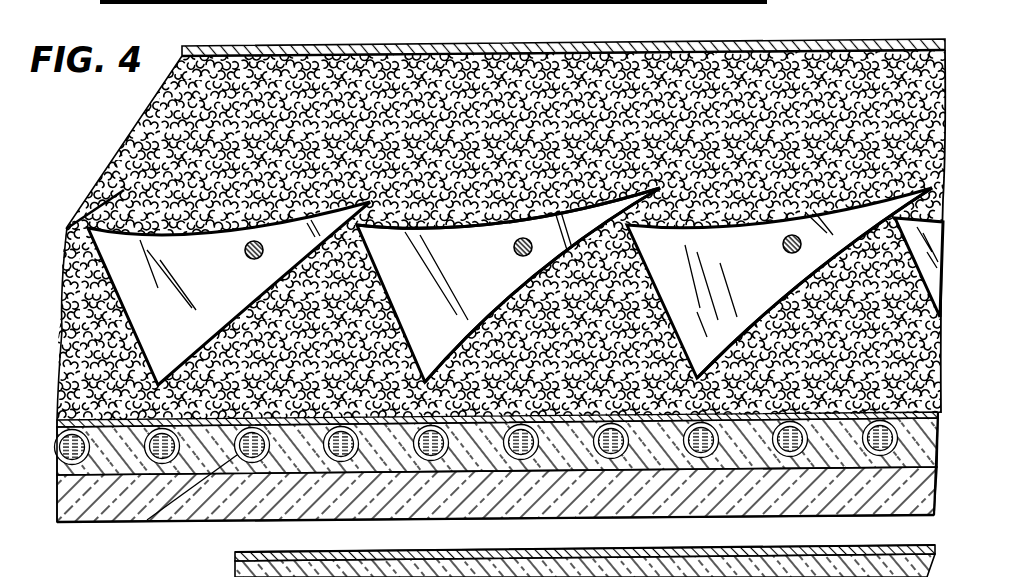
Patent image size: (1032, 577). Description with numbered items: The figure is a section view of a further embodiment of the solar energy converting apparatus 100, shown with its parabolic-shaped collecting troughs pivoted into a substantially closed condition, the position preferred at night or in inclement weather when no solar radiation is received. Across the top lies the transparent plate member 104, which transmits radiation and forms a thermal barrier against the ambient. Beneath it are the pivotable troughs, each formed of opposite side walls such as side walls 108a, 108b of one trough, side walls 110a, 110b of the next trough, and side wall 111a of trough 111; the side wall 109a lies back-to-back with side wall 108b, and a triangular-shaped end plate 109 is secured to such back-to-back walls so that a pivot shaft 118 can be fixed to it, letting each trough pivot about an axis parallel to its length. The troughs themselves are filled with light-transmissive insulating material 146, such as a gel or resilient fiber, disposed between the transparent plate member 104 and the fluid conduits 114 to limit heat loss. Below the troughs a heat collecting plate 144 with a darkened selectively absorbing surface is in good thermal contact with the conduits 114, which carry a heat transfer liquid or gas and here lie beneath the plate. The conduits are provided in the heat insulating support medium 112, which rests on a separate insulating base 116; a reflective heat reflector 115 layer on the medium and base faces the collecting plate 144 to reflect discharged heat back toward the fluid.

The solar energy converting apparatus 100 is at (404, 41).
The transparent plate member 104 is at (239, 46).
The side wall 108a is at (208, 323).
The side wall 108b is at (508, 285).
The triangular-shaped end plate 109 is at (429, 300).
The side wall 109a is at (508, 226).
The side wall 110a is at (473, 320).
The side wall 110b is at (703, 225).
The trough 111 is at (746, 270).
The side wall 111a is at (696, 291).
The heat insulating support medium 112 is at (115, 468).
The fluid conduits 114 is at (165, 462).
The heat reflector 115 is at (256, 519).
The base 116 is at (62, 526).
The pivot shafts 118 is at (245, 250).
The heat collecting plate 144 is at (98, 396).
The insulating material 146 is at (145, 130).